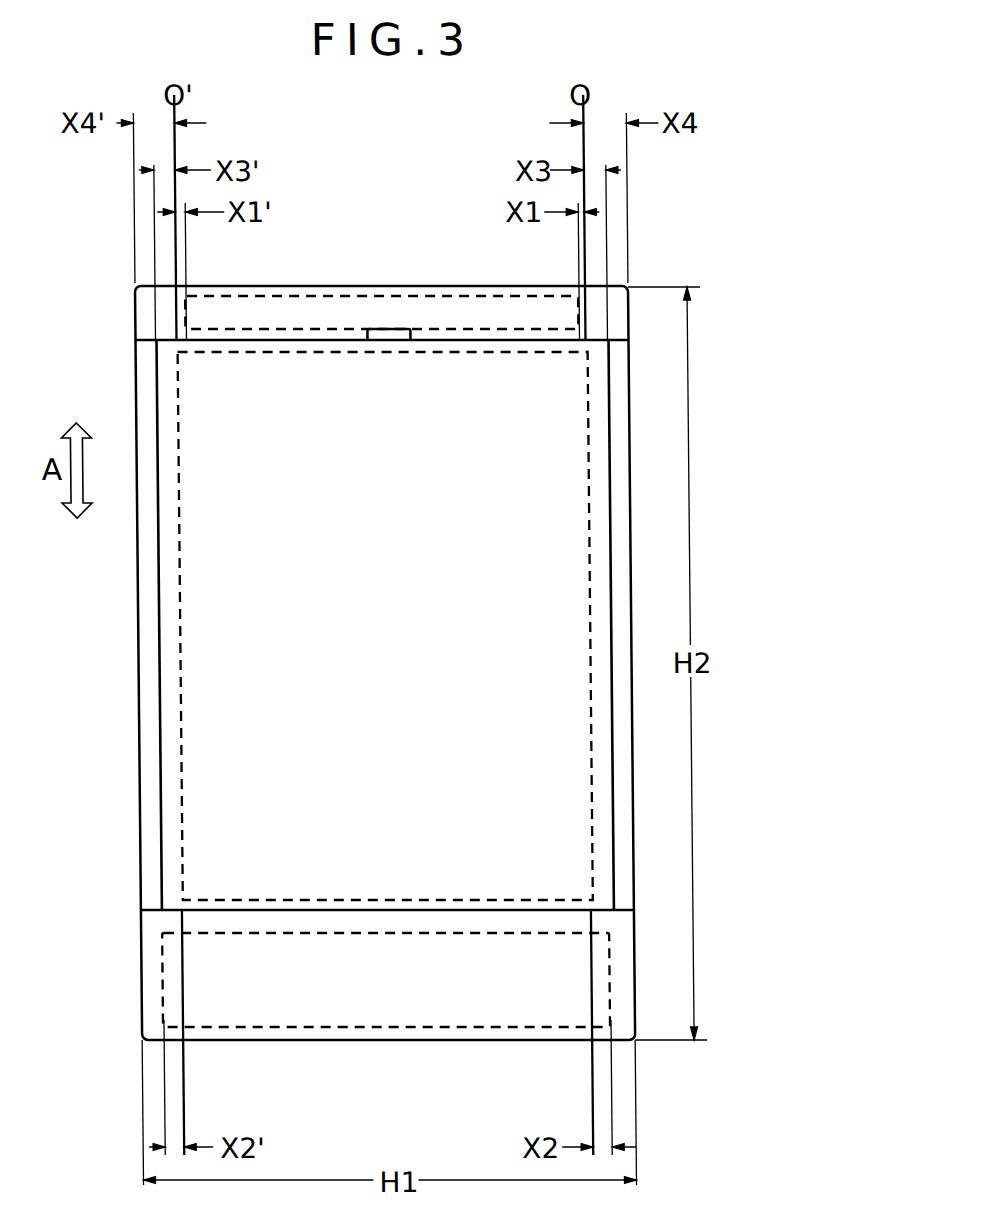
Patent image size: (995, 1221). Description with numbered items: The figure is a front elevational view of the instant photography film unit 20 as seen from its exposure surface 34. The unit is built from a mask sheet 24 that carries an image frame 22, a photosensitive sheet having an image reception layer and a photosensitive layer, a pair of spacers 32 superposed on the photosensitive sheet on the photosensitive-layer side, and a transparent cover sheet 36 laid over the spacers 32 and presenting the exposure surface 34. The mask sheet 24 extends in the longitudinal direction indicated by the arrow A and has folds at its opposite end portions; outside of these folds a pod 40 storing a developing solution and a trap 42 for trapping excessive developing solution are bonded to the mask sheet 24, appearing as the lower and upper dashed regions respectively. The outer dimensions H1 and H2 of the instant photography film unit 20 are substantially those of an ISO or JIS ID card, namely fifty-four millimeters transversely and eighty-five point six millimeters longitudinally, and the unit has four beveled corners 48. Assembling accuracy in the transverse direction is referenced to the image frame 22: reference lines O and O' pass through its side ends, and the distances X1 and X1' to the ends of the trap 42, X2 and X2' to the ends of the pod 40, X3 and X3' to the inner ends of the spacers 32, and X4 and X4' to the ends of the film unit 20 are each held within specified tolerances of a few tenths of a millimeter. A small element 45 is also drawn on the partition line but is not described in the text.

The instant photography film unit 20 is at (398, 120).
The image frame 22 is at (586, 603).
The mask sheet 24 is at (128, 805).
The spacers 32 is at (620, 487).
The exposure surface 34 is at (219, 596).
The transparent cover sheet 36 is at (204, 668).
The pod 40 is at (386, 1002).
The trap 42 is at (315, 308).
The projection 45 is at (388, 341).
The beveled corners 48 is at (134, 287).